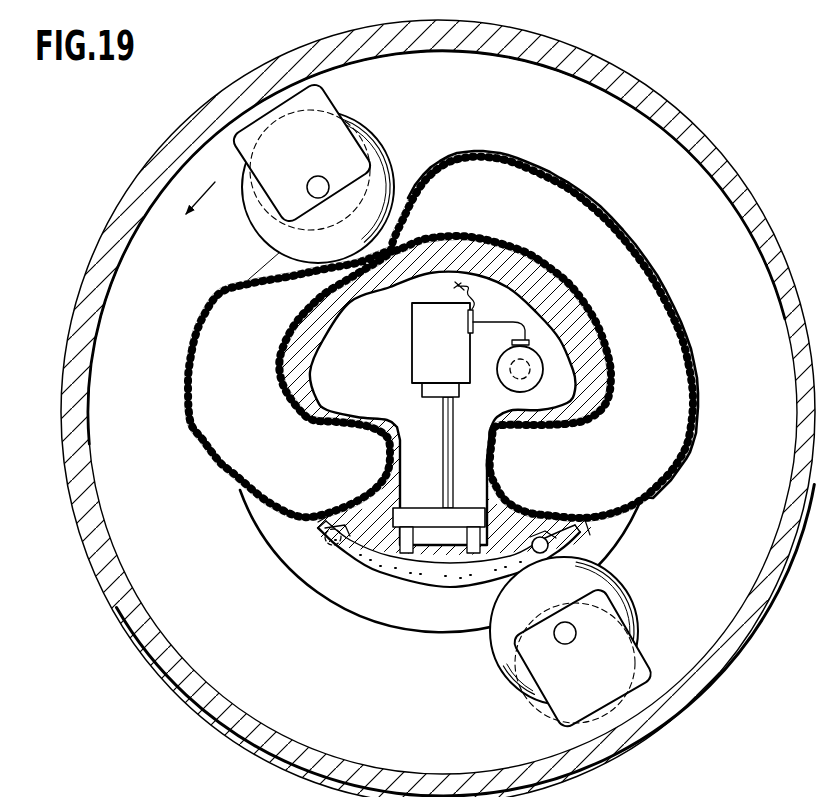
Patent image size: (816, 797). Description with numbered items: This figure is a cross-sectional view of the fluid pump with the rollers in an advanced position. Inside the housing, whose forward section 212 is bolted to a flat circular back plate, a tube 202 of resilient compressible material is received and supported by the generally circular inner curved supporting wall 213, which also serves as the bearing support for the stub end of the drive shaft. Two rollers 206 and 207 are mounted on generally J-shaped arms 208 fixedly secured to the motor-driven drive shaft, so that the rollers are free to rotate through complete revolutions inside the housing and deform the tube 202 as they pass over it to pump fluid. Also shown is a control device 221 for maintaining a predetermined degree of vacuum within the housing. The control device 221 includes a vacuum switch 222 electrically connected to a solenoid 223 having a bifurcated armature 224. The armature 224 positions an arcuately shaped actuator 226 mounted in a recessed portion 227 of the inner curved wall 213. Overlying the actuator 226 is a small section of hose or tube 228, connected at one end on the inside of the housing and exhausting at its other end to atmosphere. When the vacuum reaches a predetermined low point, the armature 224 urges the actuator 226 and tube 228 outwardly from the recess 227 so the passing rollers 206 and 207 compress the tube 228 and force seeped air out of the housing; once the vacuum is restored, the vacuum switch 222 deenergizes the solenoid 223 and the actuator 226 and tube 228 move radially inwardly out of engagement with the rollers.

The tube 202 is at (600, 207).
The roller 206 is at (387, 168).
The roller 207 is at (638, 628).
The J-shaped arm 208 is at (337, 97).
The forward section 212 is at (170, 143).
The inner curved supporting wall 213 is at (372, 283).
The control device 221 is at (406, 376).
The vacuum switch 222 is at (512, 390).
The solenoid 223 is at (454, 343).
The armature 224 is at (437, 428).
The actuator 226 is at (433, 560).
The recessed portion 227 is at (549, 540).
The tube 228 is at (360, 564).